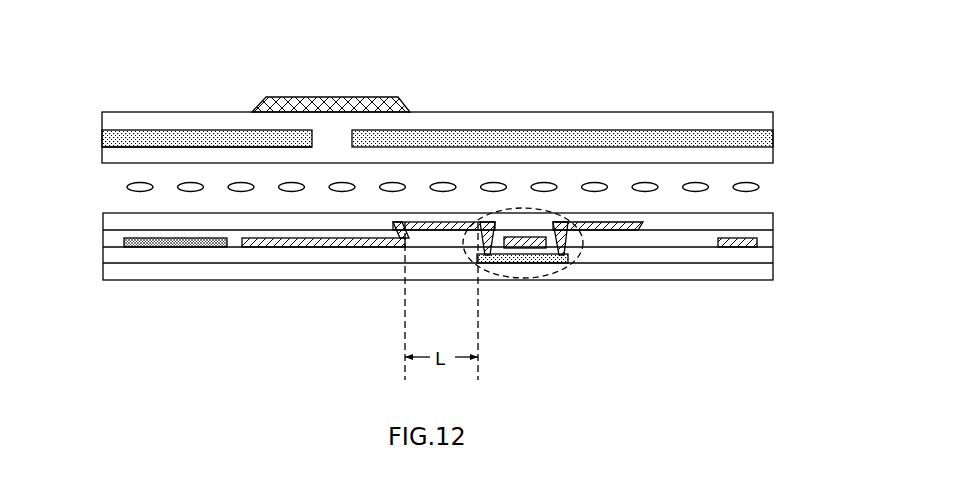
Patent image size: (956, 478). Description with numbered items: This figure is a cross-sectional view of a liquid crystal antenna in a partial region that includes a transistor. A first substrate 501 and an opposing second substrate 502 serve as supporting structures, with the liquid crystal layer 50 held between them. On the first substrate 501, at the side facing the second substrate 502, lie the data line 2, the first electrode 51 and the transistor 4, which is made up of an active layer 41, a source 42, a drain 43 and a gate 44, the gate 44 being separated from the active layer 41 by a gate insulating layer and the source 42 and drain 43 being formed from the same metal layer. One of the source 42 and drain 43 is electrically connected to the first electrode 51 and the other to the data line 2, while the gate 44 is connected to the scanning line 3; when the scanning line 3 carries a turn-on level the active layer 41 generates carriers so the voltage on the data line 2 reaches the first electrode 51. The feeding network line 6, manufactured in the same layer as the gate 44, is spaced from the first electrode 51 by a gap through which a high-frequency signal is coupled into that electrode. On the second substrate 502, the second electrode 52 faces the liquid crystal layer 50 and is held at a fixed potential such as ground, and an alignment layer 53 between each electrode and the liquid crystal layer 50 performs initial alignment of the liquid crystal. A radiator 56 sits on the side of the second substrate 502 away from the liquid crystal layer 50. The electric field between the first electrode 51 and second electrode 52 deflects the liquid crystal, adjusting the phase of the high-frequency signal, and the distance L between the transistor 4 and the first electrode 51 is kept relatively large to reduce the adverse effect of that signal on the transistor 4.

The data line 2 is at (638, 224).
The scanning line 3 is at (740, 246).
The transistor 4 is at (523, 207).
The feeding network line 6 is at (182, 243).
The active layer 41 is at (553, 239).
The source 42 is at (485, 224).
The drain 43 is at (560, 224).
The gate 44 is at (525, 241).
The liquid crystal layer 50 is at (317, 198).
The first electrode 51 is at (357, 243).
The second electrode 52 is at (477, 137).
The alignment layer 53 is at (572, 157).
The radiator 56 is at (322, 108).
The first substrate 501 is at (117, 268).
The second substrate 502 is at (121, 127).